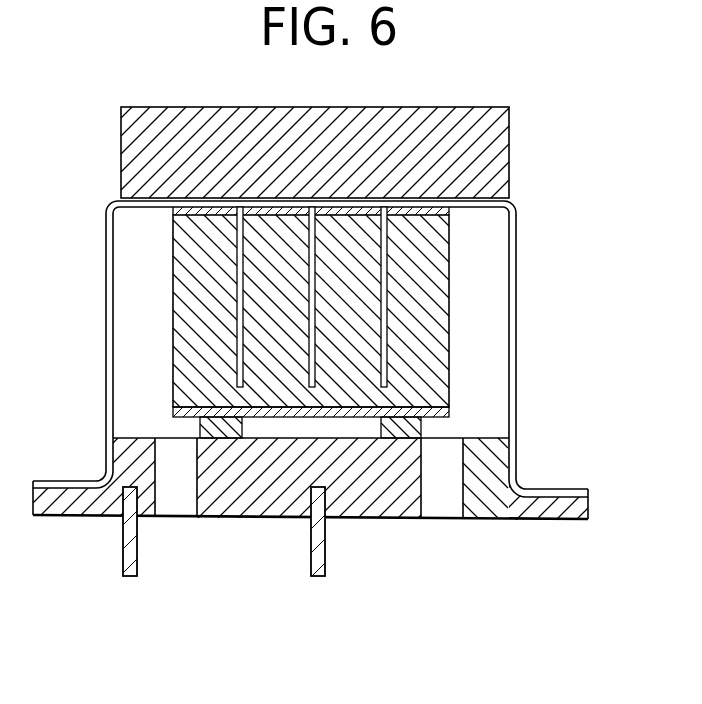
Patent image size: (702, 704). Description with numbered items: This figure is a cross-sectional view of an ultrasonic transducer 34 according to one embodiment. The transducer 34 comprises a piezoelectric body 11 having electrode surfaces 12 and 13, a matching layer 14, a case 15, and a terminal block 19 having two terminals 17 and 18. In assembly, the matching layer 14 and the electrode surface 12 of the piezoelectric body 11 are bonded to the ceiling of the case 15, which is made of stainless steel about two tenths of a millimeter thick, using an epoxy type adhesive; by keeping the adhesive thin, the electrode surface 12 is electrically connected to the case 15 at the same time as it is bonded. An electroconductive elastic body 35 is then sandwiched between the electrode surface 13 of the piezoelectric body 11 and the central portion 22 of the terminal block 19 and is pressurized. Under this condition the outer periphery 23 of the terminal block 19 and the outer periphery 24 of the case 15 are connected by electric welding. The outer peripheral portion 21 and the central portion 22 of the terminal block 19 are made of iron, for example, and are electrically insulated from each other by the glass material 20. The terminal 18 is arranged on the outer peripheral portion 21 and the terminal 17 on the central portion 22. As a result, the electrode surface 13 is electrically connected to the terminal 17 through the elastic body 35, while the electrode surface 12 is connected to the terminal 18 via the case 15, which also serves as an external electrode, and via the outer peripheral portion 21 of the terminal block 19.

The piezoelectric body 11 is at (430, 318).
The electrode surface 12 is at (449, 214).
The electrode surface 13 is at (447, 415).
The matching layer 14 is at (497, 160).
The case 15 is at (516, 268).
The terminal 17 is at (317, 578).
The terminal 18 is at (127, 578).
The terminal block 19 is at (592, 508).
The glass material 20 is at (177, 500).
The outer peripheral portion 21 is at (513, 508).
The central portion 22 is at (247, 505).
The outer periphery 23 is at (60, 500).
The outer periphery 24 is at (58, 481).
The ultrasonic transducer 34 is at (106, 204).
The electroconductive elastic body 35 is at (407, 430).